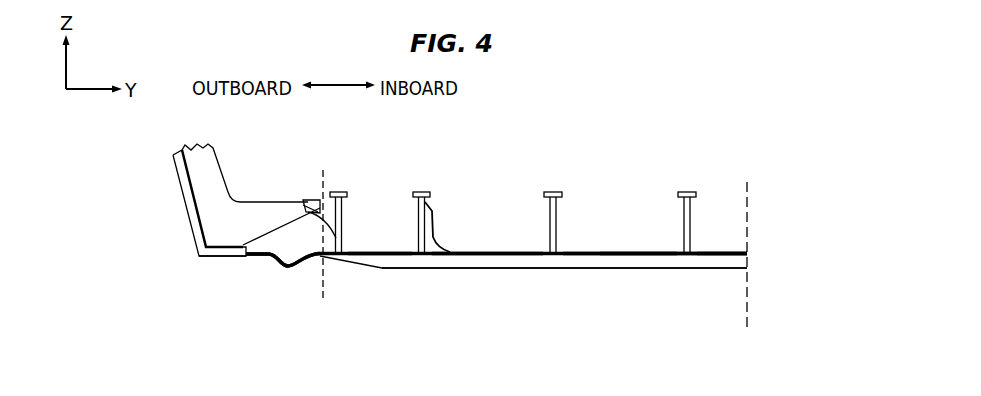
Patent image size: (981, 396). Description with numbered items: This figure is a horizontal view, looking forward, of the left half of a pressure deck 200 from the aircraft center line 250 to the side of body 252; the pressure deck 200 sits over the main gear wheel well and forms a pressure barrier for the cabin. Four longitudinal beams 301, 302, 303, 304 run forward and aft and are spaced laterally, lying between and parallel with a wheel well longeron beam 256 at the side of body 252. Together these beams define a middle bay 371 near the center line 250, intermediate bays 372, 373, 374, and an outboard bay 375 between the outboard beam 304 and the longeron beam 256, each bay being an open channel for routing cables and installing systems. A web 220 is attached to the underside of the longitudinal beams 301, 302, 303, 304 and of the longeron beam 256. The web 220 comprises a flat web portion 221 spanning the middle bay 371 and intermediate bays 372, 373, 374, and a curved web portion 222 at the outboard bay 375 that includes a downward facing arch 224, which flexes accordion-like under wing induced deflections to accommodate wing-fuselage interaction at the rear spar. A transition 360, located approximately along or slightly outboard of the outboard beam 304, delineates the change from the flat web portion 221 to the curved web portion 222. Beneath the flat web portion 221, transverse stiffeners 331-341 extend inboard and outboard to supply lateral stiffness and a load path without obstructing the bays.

The pressure deck 200 is at (621, 97).
The center line 250 is at (748, 195).
The side of body 252 is at (149, 210).
The wheel well longeron beam 256 is at (184, 255).
The curved web portion 222 is at (267, 264).
The arch 224 is at (292, 271).
The outboard bay 375 is at (287, 240).
The outboard longitudinal beam 304 is at (338, 191).
The longitudinal beam 303 is at (420, 191).
The longitudinal beam 302 is at (552, 191).
The longitudinal beam 301 is at (688, 191).
The intermediate bay 374 is at (389, 222).
The intermediate bay 373 is at (491, 222).
The intermediate bay 372 is at (595, 222).
The middle bay 371 is at (727, 220).
The web 220 is at (640, 245).
The flat web portion 221 is at (736, 250).
The transition 360 is at (325, 277).
The transverse stiffeners 331-341 is at (583, 272).